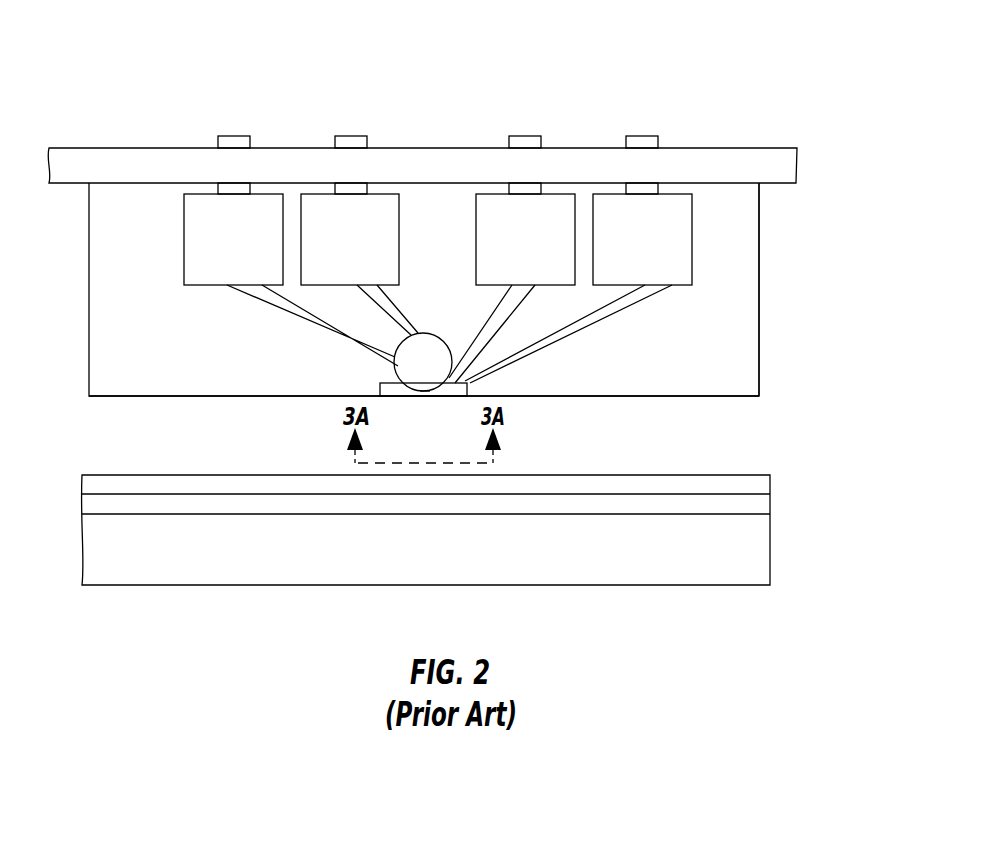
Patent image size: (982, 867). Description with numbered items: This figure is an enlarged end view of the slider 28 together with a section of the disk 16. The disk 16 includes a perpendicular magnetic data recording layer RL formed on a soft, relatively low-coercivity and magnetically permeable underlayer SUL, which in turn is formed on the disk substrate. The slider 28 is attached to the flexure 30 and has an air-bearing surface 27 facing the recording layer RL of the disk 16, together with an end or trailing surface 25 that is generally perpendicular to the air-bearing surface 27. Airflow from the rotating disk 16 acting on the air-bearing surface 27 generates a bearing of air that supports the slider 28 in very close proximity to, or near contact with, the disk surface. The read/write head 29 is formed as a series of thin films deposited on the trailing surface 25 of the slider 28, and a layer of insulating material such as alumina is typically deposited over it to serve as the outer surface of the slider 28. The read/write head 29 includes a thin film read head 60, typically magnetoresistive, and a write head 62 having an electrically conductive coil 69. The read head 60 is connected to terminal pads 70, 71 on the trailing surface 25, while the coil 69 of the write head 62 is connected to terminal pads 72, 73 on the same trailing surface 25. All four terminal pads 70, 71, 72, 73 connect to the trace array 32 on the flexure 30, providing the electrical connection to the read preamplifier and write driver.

The disk 16 is at (762, 543).
The perpendicular magnetic data recording layer RL is at (762, 486).
The soft underlayer SUL is at (762, 504).
The trailing surface 25 is at (747, 363).
The air-bearing surface 27 is at (735, 396).
The slider 28 is at (760, 290).
The read/write head 29 is at (332, 337).
The flexure 30 is at (784, 172).
The trace array 32 is at (657, 115).
The read head 60 is at (445, 393).
The write head 62 is at (428, 393).
The coil 69 is at (423, 337).
The terminal pad 70 is at (692, 228).
The terminal pad 71 is at (476, 272).
The terminal pad 72 is at (399, 220).
The terminal pad 73 is at (184, 240).